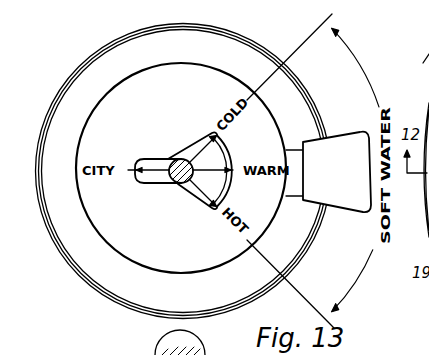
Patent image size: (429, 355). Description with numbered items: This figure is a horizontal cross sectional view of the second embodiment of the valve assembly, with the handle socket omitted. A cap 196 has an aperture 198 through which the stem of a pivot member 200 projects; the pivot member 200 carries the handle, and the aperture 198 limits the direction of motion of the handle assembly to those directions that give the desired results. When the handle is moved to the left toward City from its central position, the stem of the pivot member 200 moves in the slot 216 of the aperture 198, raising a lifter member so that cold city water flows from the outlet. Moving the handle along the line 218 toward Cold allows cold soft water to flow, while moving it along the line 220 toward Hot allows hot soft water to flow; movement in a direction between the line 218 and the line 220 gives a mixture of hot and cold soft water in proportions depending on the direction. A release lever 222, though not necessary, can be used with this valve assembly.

The cap 196 is at (128, 248).
The aperture 198 is at (200, 197).
The pivot member 200 is at (176, 161).
The slot 216 is at (151, 179).
The line 218 is at (307, 44).
The line 220 is at (311, 294).
The release lever 222 is at (351, 142).